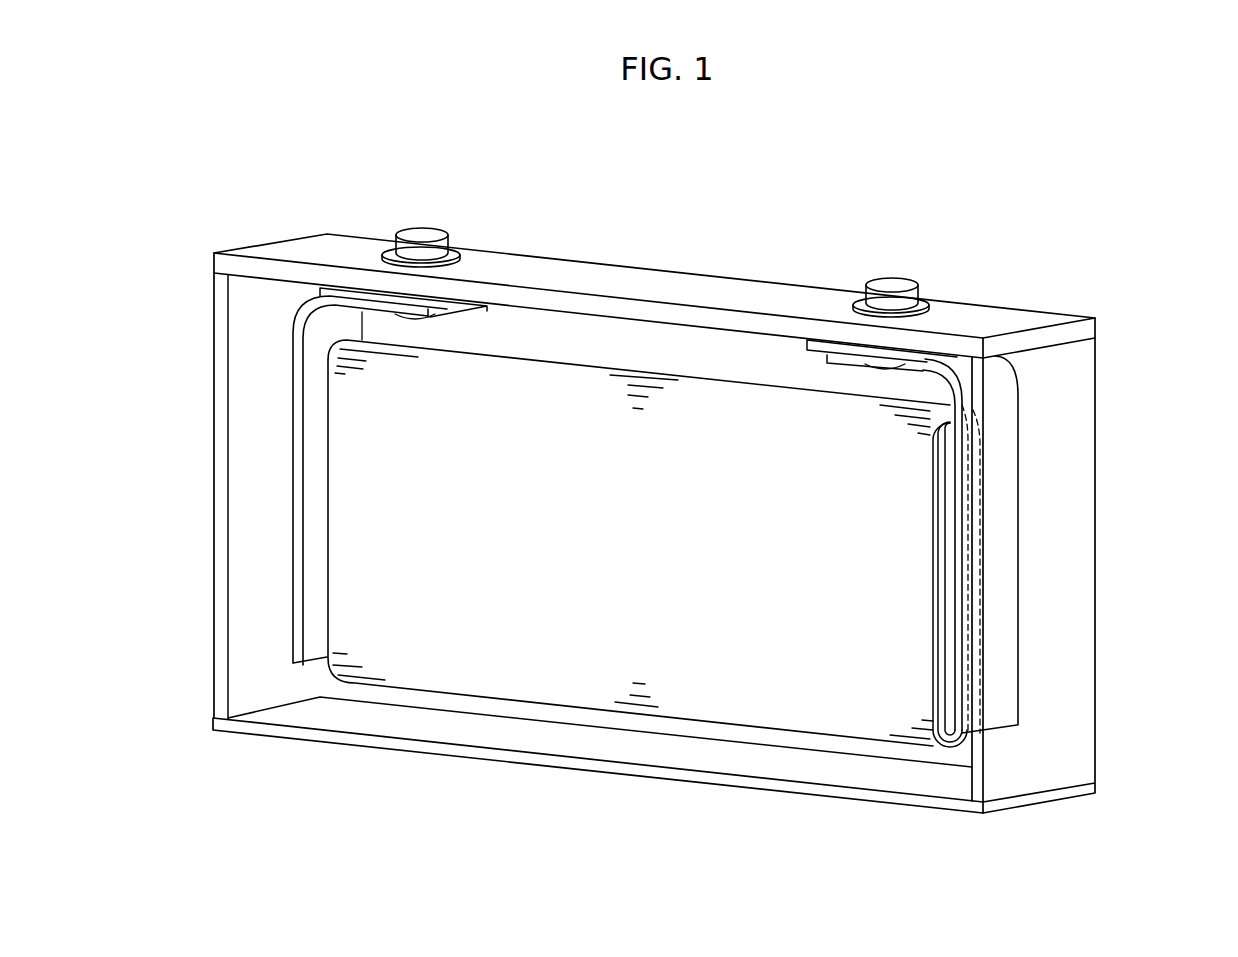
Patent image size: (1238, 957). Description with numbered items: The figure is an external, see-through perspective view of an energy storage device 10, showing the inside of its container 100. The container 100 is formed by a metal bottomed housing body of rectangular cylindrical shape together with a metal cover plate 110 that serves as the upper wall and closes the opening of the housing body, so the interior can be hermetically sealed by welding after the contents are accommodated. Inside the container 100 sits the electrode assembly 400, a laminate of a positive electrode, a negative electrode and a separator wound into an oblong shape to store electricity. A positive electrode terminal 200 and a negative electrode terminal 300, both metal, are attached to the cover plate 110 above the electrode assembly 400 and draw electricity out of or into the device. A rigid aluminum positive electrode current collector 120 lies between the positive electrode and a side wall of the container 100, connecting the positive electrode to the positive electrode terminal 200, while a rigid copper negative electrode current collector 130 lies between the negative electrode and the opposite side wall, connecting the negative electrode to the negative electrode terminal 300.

The energy storage device 10 is at (1014, 228).
The container 100 is at (214, 395).
The cover plate 110 is at (528, 270).
The positive electrode current collector 120 is at (293, 478).
The negative electrode current collector 130 is at (1003, 516).
The positive electrode terminal 200 is at (417, 235).
The negative electrode terminal 300 is at (893, 283).
The electrode assembly 400 is at (553, 681).